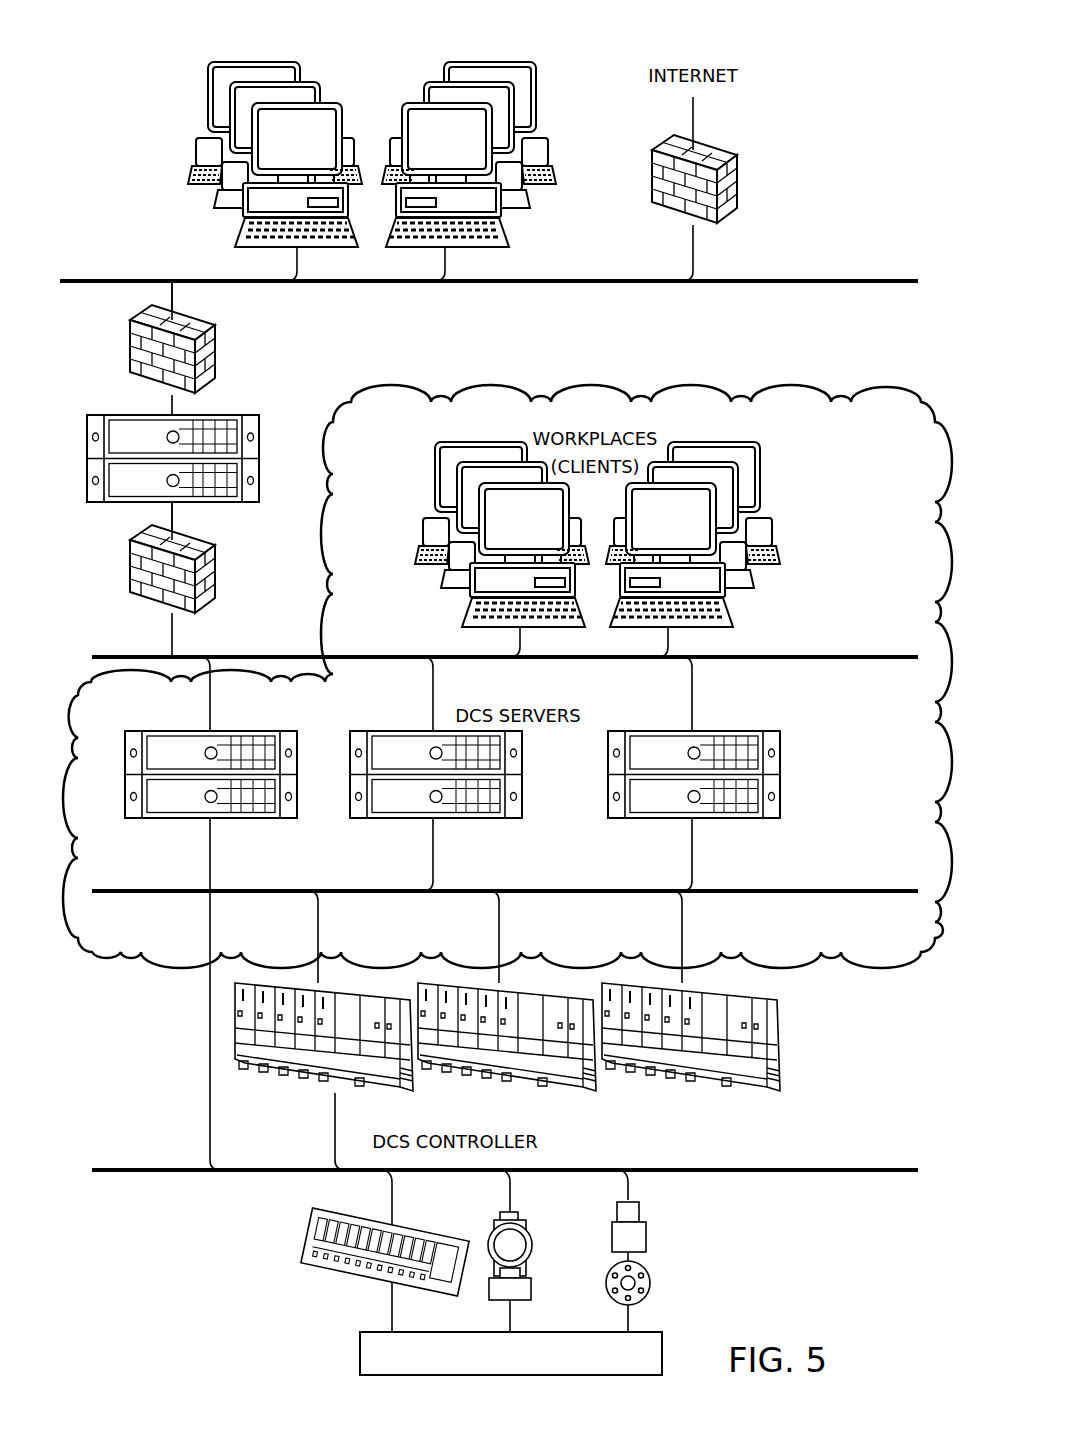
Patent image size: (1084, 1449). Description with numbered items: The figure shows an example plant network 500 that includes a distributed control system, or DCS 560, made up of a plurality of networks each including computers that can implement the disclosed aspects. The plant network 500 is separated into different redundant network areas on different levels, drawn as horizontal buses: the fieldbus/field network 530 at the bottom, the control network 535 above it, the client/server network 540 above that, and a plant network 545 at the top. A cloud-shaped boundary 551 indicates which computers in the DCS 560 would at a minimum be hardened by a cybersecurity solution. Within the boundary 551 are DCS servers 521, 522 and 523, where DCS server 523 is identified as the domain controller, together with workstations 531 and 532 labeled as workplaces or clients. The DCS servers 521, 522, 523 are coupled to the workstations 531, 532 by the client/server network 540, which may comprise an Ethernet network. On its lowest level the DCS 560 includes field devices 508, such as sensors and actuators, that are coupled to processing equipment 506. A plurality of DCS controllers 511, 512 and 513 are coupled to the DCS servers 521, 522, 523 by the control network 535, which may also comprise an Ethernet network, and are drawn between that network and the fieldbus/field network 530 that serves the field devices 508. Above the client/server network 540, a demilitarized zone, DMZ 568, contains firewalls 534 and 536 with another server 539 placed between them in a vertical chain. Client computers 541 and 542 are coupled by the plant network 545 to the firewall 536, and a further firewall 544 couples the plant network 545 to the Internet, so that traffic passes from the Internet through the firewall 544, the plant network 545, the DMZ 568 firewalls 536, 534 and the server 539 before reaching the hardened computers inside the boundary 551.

The plant network 500 is at (832, 82).
The client computer 541 is at (206, 97).
The client computer 542 is at (537, 97).
The firewall 544 is at (762, 163).
The plant network 545 is at (847, 284).
The demilitarized zone (DMZ) 568 is at (110, 395).
The firewall 536 is at (243, 347).
The server 539 is at (115, 505).
The firewall 534 is at (222, 592).
The distributed control system (DCS) 560 is at (398, 383).
The boundary 551 is at (737, 385).
The workstation 531 is at (432, 478).
The workstation 532 is at (765, 478).
The client/server network 540 is at (713, 661).
The DCS server 521 is at (173, 822).
The DCS server 522 is at (398, 822).
The DCS server (domain controller) 523 is at (782, 752).
The control network 535 is at (848, 894).
The DCS controller 511 is at (290, 1076).
The DCS controller 512 is at (472, 1076).
The DCS controller 513 is at (655, 1076).
The fieldbus/field network 530 is at (847, 1173).
The field devices 508 is at (282, 1250).
The processing equipment 506 is at (358, 1352).